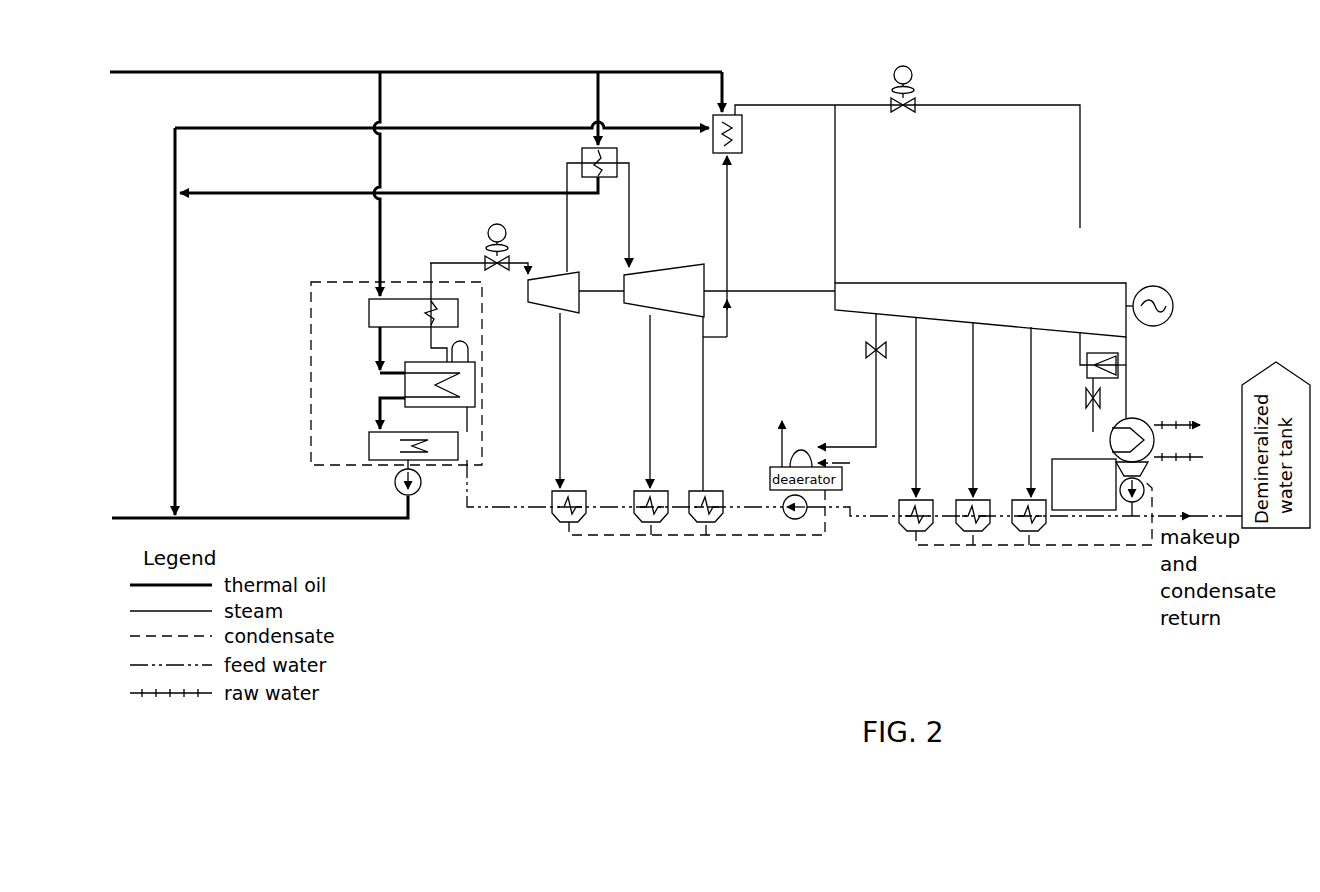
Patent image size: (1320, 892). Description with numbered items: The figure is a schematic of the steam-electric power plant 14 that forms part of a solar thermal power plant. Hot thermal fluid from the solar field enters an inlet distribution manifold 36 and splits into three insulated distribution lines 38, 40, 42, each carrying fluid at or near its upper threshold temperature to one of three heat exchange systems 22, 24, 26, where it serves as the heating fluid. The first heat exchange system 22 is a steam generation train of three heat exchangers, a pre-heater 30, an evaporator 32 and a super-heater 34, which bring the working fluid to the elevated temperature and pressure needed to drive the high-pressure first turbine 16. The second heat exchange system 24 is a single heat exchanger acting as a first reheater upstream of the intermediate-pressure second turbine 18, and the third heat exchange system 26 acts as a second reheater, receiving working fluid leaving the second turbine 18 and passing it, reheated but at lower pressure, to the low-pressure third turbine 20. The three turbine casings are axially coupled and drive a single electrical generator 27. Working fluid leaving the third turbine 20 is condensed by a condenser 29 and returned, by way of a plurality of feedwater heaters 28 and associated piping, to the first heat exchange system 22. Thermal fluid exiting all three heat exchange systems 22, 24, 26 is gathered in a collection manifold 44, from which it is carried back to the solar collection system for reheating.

The steam-electric power plant 14 is at (1117, 75).
The first turbine 16 is at (576, 380).
The second turbine 18 is at (729, 377).
The third turbine 20 is at (972, 390).
The first heat exchange system 22 is at (311, 370).
The second heat exchange system 24 is at (617, 152).
The third heat exchange system 26 is at (742, 128).
The electrical generator 27 is at (1173, 312).
The feedwater heaters 28 is at (710, 523).
The condenser 29 is at (1132, 418).
The pre-heater 30 is at (369, 447).
The evaporator 32 is at (421, 362).
The super-heater 34 is at (369, 310).
The inlet distribution manifold 36 is at (258, 72).
The first distribution line 38 is at (380, 90).
The second distribution line 40 is at (598, 90).
The third distribution line 42 is at (723, 72).
The collection manifold 44 is at (147, 518).